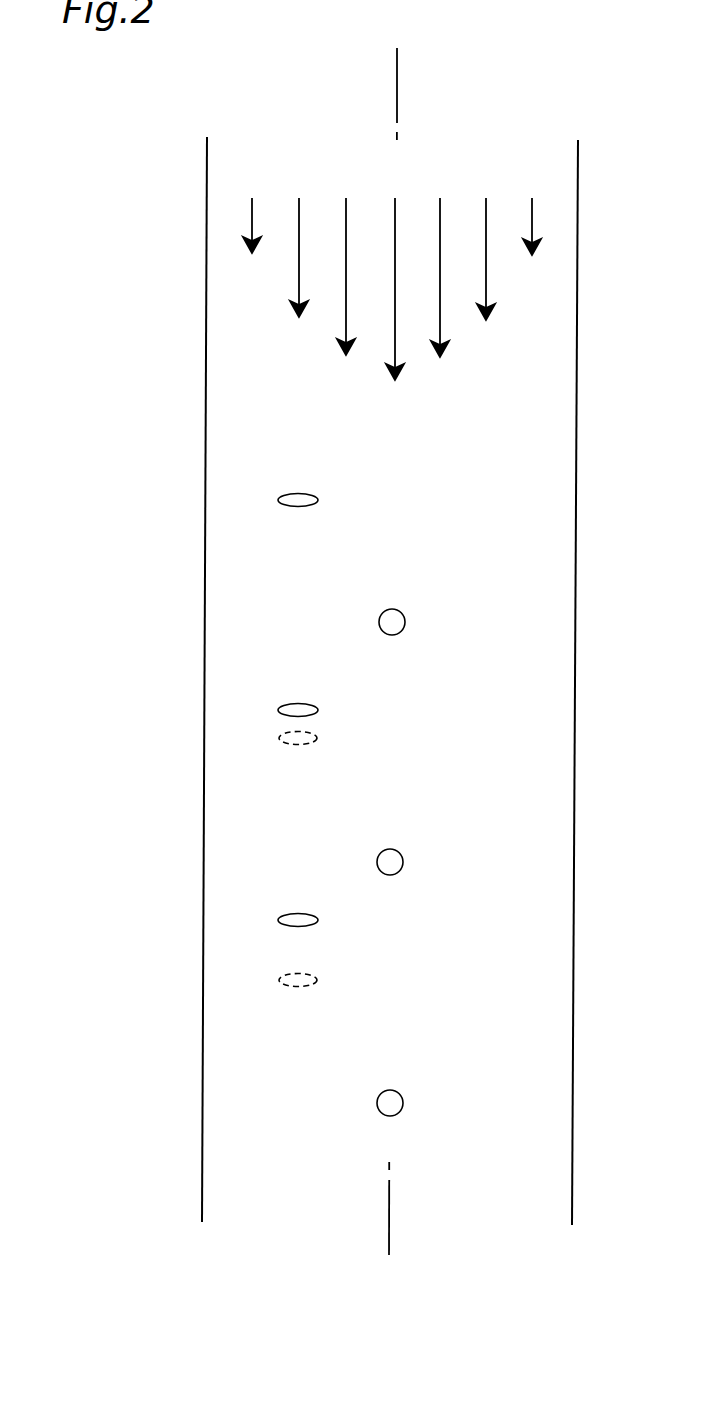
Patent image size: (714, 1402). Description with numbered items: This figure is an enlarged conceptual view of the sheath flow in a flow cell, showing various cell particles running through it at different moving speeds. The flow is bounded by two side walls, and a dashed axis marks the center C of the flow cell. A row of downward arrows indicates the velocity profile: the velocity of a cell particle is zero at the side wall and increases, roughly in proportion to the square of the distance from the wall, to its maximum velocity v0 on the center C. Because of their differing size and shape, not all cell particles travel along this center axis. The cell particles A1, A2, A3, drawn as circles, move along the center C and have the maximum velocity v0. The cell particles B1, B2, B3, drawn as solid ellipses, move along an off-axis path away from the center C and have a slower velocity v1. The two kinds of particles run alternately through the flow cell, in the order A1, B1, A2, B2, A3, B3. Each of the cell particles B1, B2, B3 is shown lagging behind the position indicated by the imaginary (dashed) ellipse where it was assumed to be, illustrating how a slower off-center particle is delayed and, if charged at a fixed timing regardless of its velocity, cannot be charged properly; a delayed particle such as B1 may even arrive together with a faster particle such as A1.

The center of the flow cell C is at (397, 85).
The velocity of off-center cell particles v1 is at (298, 279).
The maximum velocity v0 is at (392, 312).
The cell particle A1 is at (414, 1106).
The cell particle A2 is at (414, 866).
The cell particle A3 is at (415, 626).
The cell particle B1 is at (273, 944).
The cell particle B2 is at (273, 716).
The cell particle B3 is at (273, 501).